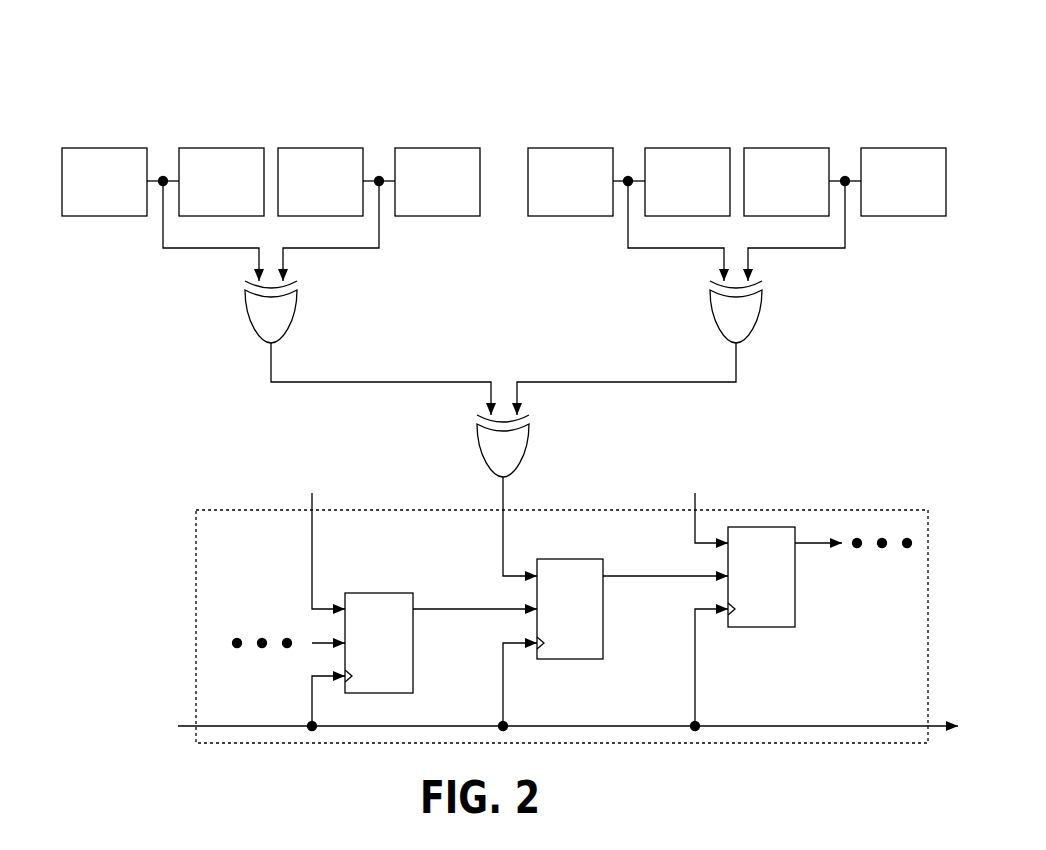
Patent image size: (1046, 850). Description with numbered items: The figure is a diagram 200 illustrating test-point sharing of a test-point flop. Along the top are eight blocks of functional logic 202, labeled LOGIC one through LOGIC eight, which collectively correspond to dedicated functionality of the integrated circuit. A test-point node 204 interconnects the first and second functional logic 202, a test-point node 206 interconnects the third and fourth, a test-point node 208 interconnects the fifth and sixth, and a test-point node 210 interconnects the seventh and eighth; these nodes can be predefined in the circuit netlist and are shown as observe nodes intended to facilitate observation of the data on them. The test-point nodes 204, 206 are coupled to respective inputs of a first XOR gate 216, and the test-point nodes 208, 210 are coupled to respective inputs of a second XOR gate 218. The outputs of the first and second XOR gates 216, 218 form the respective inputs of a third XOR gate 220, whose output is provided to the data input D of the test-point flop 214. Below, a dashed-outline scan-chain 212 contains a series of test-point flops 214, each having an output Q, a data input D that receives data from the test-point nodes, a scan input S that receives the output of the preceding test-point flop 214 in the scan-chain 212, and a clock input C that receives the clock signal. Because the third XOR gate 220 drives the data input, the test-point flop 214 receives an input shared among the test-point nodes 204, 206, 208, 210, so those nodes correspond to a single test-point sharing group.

The diagram 200 is at (140, 52).
The functional logic 202 is at (110, 148).
The test-point node 204 is at (153, 227).
The test-point node 206 is at (388, 226).
The test-point node 208 is at (618, 230).
The test-point node 210 is at (853, 228).
The scan-chain 212 is at (260, 510).
The test-point flop 214 is at (570, 559).
The first XOR gate 216 is at (250, 325).
The second XOR gate 218 is at (716, 325).
The third XOR gate 220 is at (481, 452).